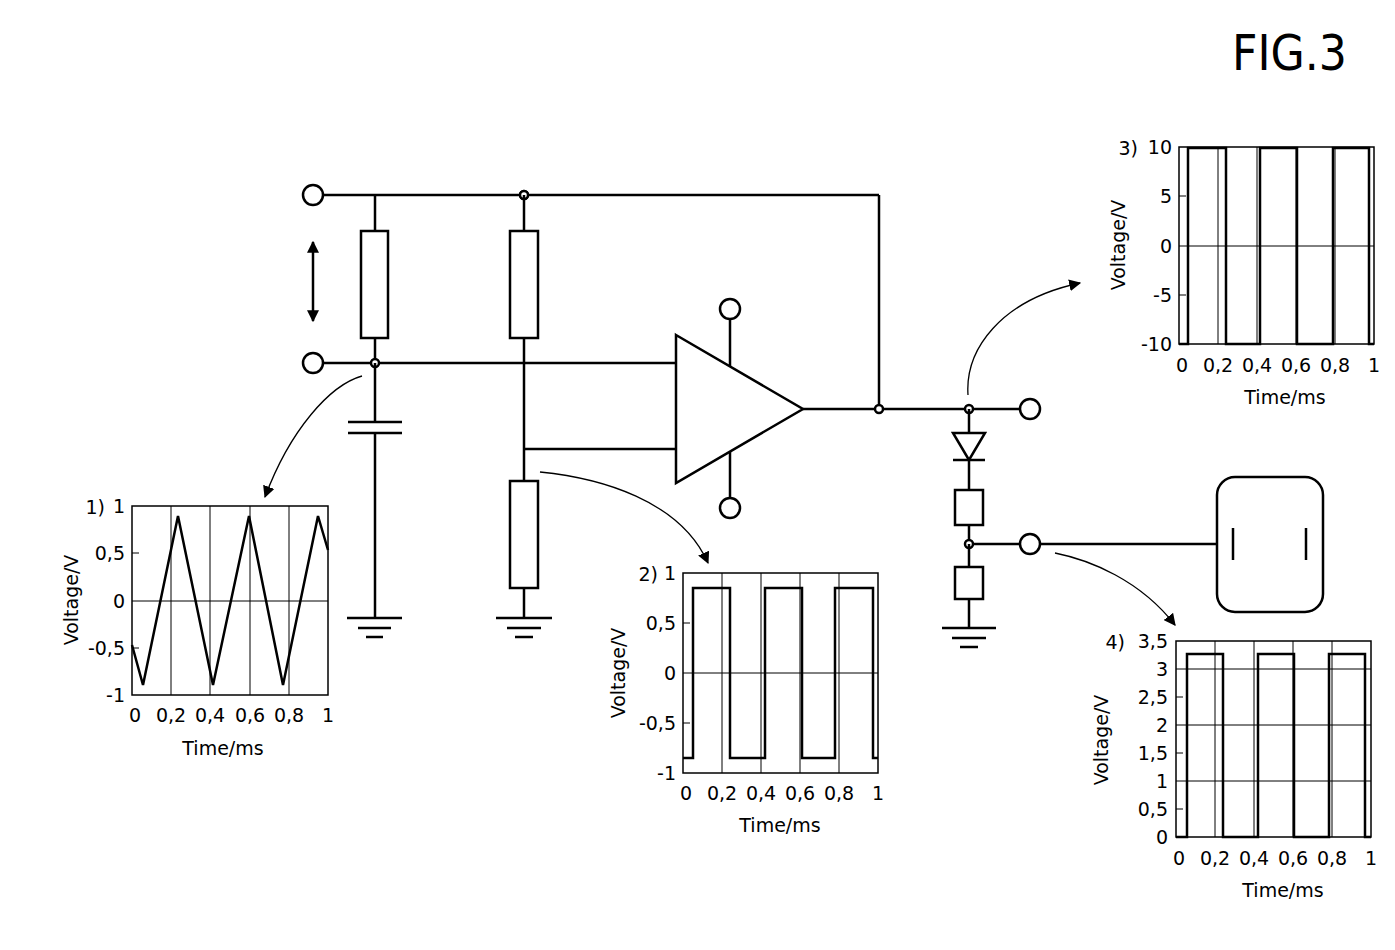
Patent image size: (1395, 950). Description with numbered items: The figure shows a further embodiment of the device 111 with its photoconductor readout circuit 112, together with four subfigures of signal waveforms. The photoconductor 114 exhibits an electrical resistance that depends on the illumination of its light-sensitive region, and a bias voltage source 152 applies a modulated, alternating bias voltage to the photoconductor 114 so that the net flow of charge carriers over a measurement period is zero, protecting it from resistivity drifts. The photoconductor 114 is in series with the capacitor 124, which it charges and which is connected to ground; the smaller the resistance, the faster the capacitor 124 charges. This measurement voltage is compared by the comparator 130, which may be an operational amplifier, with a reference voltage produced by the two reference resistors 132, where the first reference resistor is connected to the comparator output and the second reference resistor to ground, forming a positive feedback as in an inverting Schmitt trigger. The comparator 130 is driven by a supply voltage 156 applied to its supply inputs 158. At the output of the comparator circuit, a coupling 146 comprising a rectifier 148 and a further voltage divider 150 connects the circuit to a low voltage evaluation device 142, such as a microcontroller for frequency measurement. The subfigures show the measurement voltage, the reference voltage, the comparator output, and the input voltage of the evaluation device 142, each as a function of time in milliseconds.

The device 111 is at (532, 172).
The photoconductor readout circuit 112 is at (490, 131).
The photoconductor 114 is at (388, 232).
The capacitor 124 is at (387, 439).
The comparator 130 is at (772, 388).
The reference resistors 132 is at (538, 240).
The evaluation device 142 is at (1245, 586).
The coupling 146 is at (997, 521).
The rectifier 148 is at (987, 444).
The further voltage divider 150 is at (932, 589).
The bias voltage source 152 is at (292, 328).
The supply voltage 156 is at (775, 482).
The supply inputs 158 is at (730, 299).